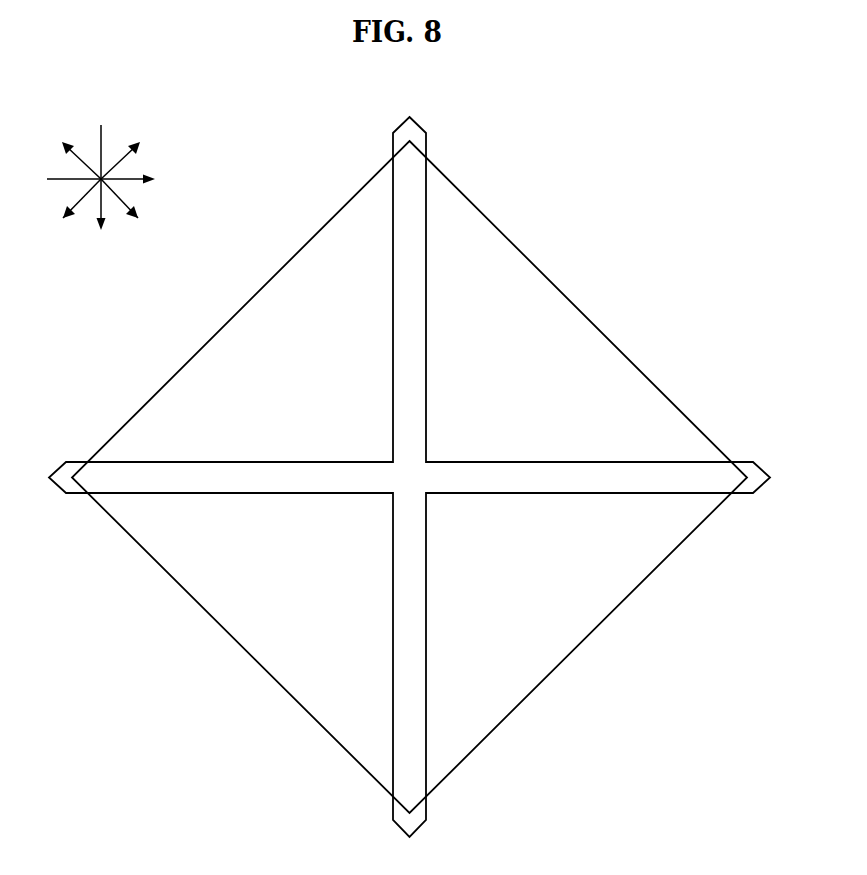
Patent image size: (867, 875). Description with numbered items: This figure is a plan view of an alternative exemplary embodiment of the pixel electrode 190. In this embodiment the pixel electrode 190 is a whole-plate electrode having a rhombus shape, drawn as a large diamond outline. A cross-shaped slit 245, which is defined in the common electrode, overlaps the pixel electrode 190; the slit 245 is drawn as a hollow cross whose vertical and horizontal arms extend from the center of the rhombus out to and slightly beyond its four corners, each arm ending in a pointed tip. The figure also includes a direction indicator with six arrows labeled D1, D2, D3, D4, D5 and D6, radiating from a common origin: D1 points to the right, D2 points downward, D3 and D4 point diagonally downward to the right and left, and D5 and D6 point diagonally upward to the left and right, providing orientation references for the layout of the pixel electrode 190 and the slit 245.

The pixel electrode 190 is at (509, 240).
The cross-shaped slit 245 is at (672, 462).
The first direction D1 is at (115, 181).
The second direction D2 is at (100, 191).
The third direction D3 is at (133, 210).
The fourth direction D4 is at (70, 210).
The fifth direction D5 is at (70, 148).
The sixth direction D6 is at (134, 148).